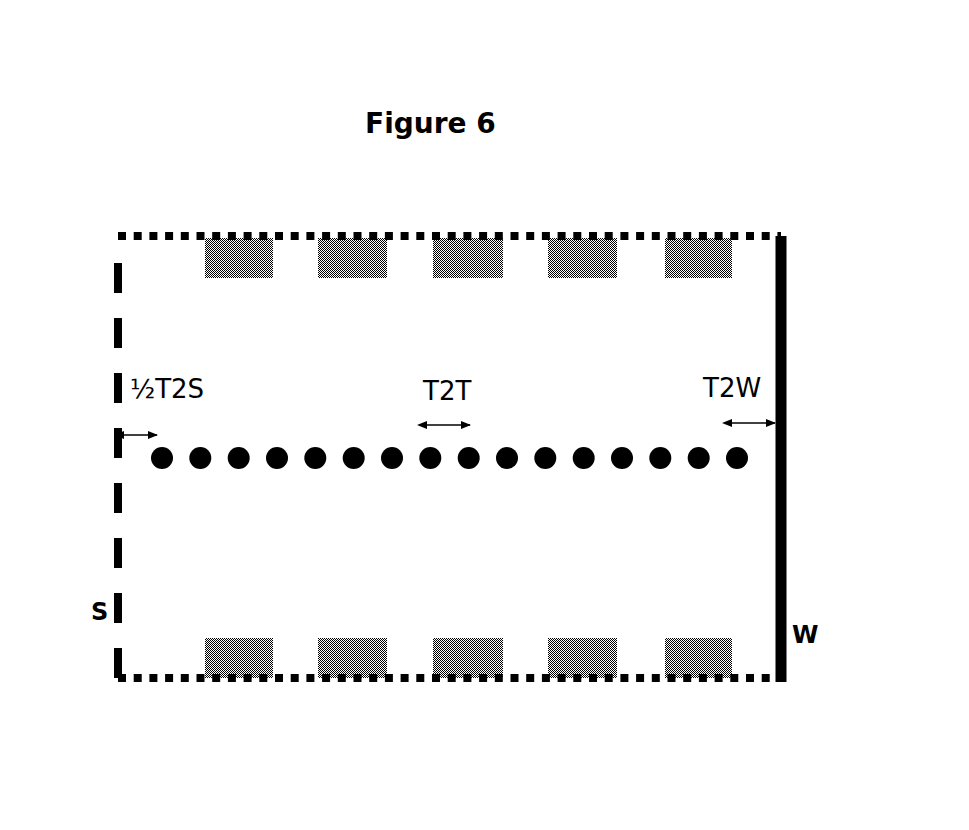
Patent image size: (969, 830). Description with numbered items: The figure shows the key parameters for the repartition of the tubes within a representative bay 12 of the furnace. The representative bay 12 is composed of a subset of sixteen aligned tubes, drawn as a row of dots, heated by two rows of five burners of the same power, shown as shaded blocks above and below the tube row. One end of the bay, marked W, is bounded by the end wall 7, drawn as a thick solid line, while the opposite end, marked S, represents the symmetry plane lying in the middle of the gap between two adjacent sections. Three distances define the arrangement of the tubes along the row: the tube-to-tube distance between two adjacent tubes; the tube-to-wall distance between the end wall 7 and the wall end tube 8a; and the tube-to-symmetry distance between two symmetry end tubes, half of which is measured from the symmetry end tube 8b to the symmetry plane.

The representative bay 12 is at (283, 125).
The end wall 7 is at (788, 334).
The wall end tube 8a is at (745, 461).
The second end contact pad 8b is at (151, 463).